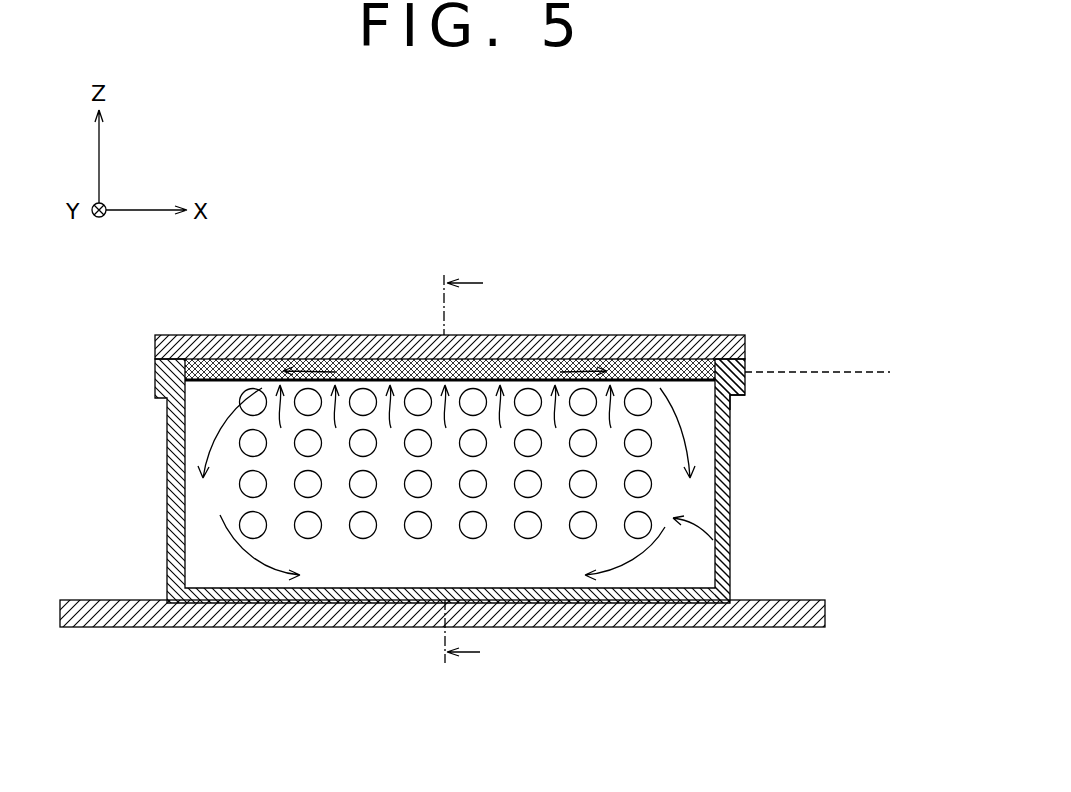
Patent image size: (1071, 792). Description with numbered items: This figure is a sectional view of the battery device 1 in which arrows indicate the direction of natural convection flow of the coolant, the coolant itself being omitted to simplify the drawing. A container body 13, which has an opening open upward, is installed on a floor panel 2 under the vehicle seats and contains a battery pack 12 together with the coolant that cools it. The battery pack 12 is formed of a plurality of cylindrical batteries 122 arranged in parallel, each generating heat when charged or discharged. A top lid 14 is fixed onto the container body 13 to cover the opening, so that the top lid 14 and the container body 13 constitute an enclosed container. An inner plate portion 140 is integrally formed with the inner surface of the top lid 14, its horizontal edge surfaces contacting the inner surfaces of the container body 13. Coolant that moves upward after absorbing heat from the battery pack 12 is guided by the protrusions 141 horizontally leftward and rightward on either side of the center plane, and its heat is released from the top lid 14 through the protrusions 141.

The battery device 1 is at (687, 307).
The floor panel 2 is at (93, 603).
The battery pack 12 is at (729, 558).
The container body 13 is at (730, 492).
The top lid 14 is at (739, 335).
The cylindrical battery 122 is at (652, 485).
The inner plate portion 140 is at (748, 383).
The protrusion 141 is at (737, 405).